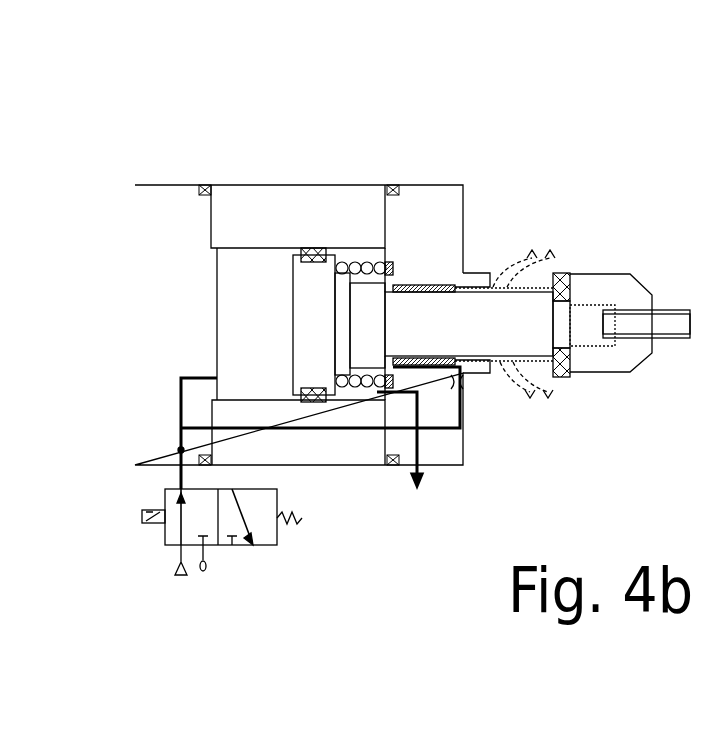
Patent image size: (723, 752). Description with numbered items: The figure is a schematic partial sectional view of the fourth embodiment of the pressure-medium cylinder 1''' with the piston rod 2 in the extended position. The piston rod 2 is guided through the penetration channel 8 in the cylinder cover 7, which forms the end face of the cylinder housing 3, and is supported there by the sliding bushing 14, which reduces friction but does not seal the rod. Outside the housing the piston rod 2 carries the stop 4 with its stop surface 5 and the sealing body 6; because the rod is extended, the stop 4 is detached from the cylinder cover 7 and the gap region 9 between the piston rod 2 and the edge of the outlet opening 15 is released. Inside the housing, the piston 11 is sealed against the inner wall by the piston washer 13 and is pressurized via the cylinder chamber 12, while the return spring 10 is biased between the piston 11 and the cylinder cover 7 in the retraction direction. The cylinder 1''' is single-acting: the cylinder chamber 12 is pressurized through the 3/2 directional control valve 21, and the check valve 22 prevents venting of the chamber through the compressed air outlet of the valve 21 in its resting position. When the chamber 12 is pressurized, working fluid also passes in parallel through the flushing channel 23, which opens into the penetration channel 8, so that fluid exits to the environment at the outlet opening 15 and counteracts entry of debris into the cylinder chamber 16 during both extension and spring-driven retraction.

The pressure-medium cylinder 1''' is at (262, 242).
The piston rod 2 is at (420, 330).
The cylinder housing 3 is at (312, 466).
The stop 4 is at (642, 282).
The stop surface 5 is at (620, 372).
The sealing body 6 is at (565, 272).
The cylinder cover 7 is at (423, 215).
The penetration channel 8 is at (470, 378).
The gap region 9 is at (468, 285).
The return spring 10 is at (350, 262).
The piston 11 is at (288, 328).
The cylinder chamber 12 is at (265, 296).
The piston washer 13 is at (308, 248).
The sliding bushing 14 is at (425, 283).
The outlet opening 15 is at (490, 288).
The cylinder chamber 16 is at (383, 262).
The 3/2 directional control valve 21 is at (163, 538).
The check valve 22 is at (181, 450).
The flushing channel 23 is at (358, 430).